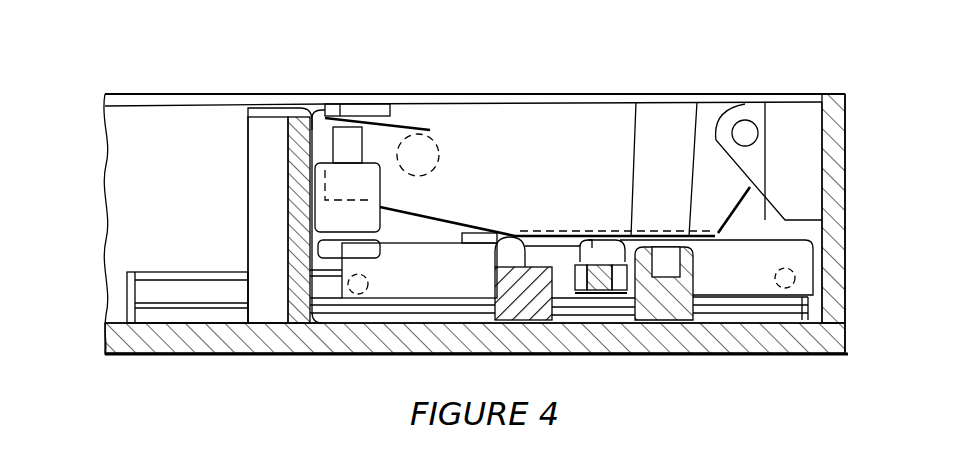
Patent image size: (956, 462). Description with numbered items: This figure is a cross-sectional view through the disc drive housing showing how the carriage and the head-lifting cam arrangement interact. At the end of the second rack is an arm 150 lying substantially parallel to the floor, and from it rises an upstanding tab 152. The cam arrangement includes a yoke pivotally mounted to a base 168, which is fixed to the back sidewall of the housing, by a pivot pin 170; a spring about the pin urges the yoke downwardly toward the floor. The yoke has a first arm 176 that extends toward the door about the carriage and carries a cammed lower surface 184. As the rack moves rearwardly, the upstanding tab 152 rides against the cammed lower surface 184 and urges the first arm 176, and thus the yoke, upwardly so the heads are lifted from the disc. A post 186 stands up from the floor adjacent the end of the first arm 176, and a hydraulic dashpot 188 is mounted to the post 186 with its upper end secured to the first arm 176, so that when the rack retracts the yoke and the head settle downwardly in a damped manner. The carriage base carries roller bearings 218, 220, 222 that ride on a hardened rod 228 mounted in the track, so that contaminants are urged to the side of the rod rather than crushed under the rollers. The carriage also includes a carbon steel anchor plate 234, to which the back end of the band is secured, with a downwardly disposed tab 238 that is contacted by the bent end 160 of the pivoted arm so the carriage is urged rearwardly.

The arm 150 is at (505, 332).
The upstanding tab 152 is at (505, 250).
The bent end 160 is at (612, 298).
The base 168 is at (776, 112).
The pivot pin 170 is at (742, 128).
The first arm 176 is at (495, 140).
The cammed lower surface 184 is at (593, 237).
The post 186 is at (262, 167).
The hydraulic dashpot 188 is at (368, 193).
The roller bearing 218 is at (360, 296).
The roller bearing 220 is at (578, 298).
The roller bearing 222 is at (785, 296).
The hardened rod 228 is at (170, 304).
The anchor plate 234 is at (782, 238).
The downwardly disposed tab 238 is at (630, 250).